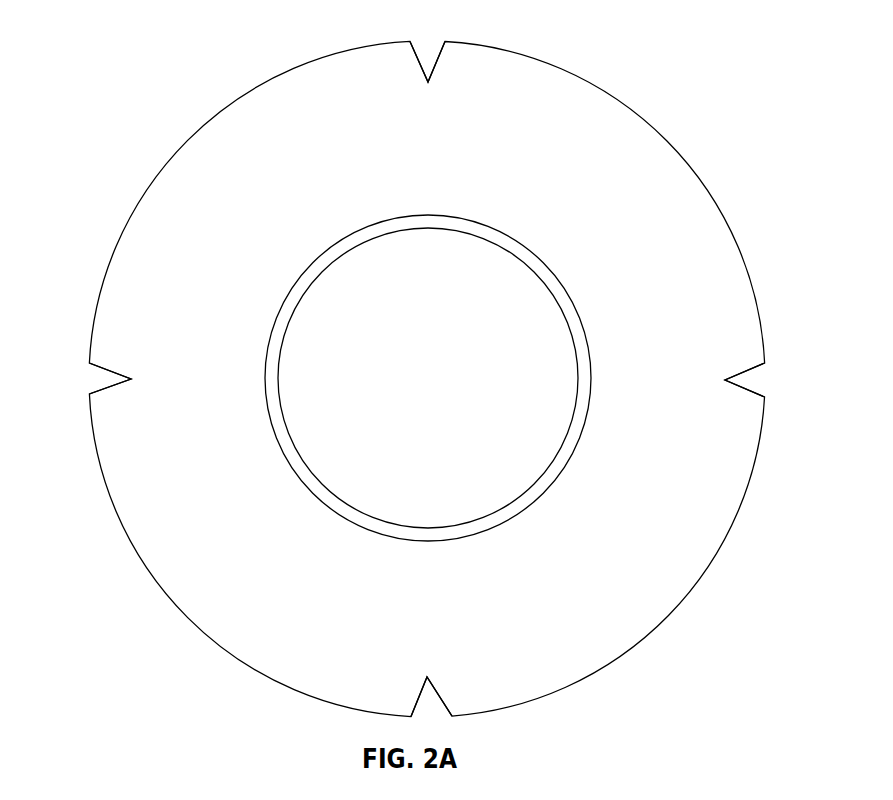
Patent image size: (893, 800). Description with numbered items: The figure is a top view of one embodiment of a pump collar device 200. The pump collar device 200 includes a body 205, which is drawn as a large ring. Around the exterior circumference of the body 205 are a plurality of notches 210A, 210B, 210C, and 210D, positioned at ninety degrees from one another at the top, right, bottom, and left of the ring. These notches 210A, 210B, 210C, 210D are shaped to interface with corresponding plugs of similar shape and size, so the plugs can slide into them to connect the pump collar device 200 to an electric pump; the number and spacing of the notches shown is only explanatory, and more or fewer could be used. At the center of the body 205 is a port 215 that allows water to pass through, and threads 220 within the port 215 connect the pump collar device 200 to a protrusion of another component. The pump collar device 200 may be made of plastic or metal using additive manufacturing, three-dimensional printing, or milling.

The pump collar device 200 is at (137, 46).
The body 205 is at (183, 140).
The notch 210A is at (433, 68).
The notch 210B is at (750, 388).
The notch 210C is at (420, 698).
The notch 210D is at (107, 387).
The port 215 is at (538, 275).
The threads 220 is at (560, 477).